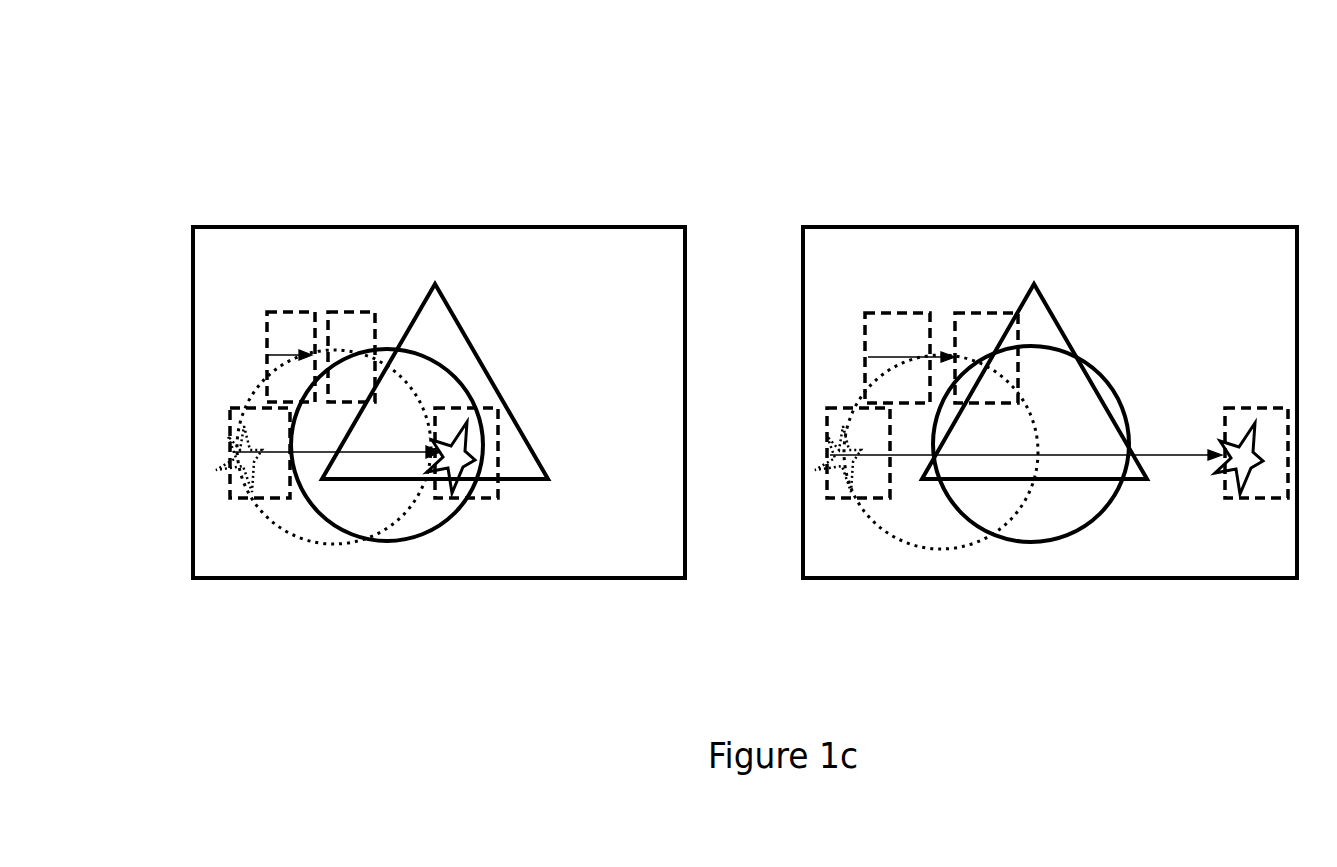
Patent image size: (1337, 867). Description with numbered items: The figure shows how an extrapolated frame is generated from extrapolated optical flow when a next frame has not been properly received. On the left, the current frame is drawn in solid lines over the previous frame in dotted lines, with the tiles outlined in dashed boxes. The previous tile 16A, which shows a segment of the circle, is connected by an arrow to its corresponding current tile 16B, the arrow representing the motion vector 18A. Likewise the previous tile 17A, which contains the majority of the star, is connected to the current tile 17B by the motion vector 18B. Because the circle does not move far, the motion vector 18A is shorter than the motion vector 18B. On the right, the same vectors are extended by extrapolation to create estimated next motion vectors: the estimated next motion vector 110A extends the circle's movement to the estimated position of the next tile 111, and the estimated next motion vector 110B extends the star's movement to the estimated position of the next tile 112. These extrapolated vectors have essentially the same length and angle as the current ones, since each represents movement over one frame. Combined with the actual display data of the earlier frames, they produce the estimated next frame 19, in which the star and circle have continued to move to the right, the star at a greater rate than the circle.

The previous tile 16A is at (297, 312).
The current tile 16B is at (343, 312).
The motion vector 18A is at (305, 357).
The previous tile 17A is at (258, 498).
The current tile 17B is at (468, 500).
The motion vector 18B is at (358, 455).
The next frame 19 is at (1050, 227).
The estimated next motion vector 110A is at (922, 357).
The next tile 111 is at (985, 313).
The estimated next motion vector 110B is at (1156, 455).
The next tile 112 is at (1256, 500).